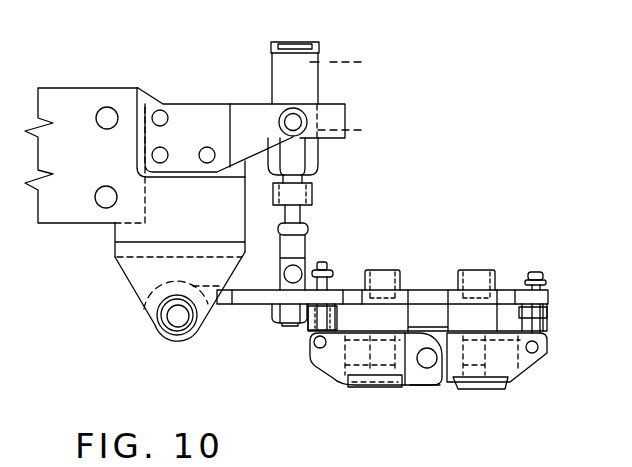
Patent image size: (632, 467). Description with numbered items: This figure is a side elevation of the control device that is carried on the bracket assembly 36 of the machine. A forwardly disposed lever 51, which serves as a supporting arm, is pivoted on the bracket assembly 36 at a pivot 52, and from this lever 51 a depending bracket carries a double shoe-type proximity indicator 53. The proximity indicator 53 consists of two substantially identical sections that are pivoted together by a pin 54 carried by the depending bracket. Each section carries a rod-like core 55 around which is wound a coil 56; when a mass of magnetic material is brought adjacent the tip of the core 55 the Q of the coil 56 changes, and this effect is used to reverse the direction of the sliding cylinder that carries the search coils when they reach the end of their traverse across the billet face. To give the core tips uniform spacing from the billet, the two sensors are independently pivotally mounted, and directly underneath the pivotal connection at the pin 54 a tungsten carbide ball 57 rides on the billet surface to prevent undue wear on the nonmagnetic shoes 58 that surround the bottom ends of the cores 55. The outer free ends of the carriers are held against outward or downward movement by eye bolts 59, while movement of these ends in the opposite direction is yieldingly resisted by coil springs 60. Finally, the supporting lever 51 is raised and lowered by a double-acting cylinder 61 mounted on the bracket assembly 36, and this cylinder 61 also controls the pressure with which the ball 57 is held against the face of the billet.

The bracket assembly 36 is at (85, 208).
The pivot 52 is at (177, 316).
The double-acting cylinder 61 is at (308, 90).
The lever 51 is at (548, 297).
The eye bolts 59 is at (325, 270).
The coil 56 is at (402, 287).
The coil springs 60 is at (307, 330).
The proximity indicator 53 is at (398, 418).
The nonmagnetic shoes 58 is at (357, 383).
The rod-like core 55 is at (392, 387).
The pin 54 is at (437, 378).
The tungsten carbide ball 57 is at (422, 388).